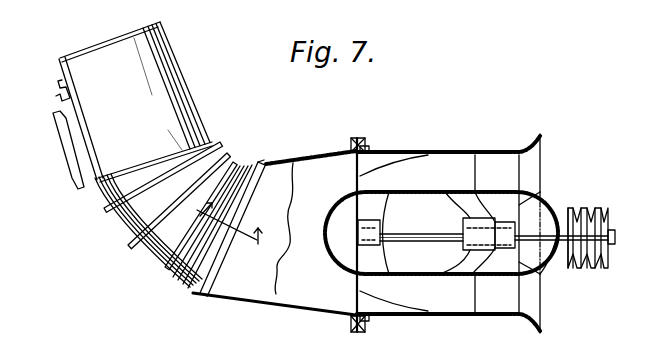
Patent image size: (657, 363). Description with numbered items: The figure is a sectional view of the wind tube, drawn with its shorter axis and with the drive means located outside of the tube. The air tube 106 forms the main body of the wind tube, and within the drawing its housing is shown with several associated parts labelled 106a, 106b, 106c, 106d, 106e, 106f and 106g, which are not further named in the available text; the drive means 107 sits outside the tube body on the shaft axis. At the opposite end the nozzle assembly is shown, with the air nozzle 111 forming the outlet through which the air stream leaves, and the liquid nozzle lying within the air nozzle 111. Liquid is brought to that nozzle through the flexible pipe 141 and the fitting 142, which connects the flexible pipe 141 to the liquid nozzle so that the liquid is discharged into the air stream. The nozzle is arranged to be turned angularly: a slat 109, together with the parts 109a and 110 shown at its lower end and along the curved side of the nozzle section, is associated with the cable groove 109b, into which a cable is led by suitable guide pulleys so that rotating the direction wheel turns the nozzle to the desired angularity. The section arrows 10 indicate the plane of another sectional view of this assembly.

The section arrows 10 is at (211, 238).
The air tube 106 is at (441, 150).
The housing end plates 106a is at (456, 165).
The inner drum casing 106b is at (440, 193).
The impeller blade 106c is at (385, 221).
The shaft 106d is at (422, 235).
The housing outlet wall 106e is at (510, 228).
The housing flared flange 106f is at (511, 175).
The drum end 106g is at (551, 268).
The pulley 107 is at (575, 228).
The slat 109 is at (271, 167).
The slat lower end 109a is at (194, 292).
The cable groove 109b is at (261, 162).
The louver assembly 110 is at (126, 224).
The air nozzle 111 is at (180, 83).
The flexible pipe 141 is at (59, 148).
The fitting 142 is at (61, 89).